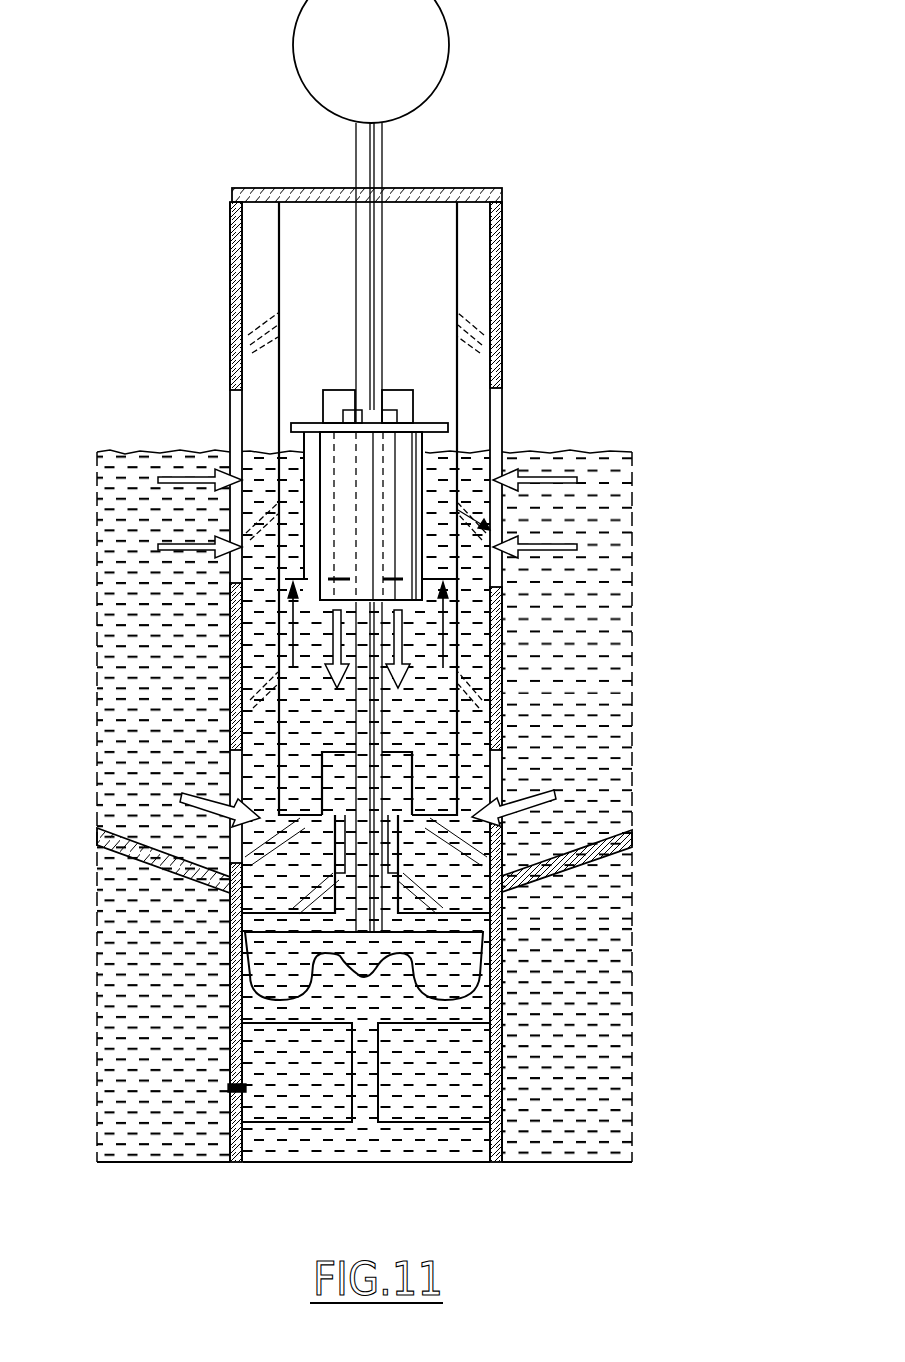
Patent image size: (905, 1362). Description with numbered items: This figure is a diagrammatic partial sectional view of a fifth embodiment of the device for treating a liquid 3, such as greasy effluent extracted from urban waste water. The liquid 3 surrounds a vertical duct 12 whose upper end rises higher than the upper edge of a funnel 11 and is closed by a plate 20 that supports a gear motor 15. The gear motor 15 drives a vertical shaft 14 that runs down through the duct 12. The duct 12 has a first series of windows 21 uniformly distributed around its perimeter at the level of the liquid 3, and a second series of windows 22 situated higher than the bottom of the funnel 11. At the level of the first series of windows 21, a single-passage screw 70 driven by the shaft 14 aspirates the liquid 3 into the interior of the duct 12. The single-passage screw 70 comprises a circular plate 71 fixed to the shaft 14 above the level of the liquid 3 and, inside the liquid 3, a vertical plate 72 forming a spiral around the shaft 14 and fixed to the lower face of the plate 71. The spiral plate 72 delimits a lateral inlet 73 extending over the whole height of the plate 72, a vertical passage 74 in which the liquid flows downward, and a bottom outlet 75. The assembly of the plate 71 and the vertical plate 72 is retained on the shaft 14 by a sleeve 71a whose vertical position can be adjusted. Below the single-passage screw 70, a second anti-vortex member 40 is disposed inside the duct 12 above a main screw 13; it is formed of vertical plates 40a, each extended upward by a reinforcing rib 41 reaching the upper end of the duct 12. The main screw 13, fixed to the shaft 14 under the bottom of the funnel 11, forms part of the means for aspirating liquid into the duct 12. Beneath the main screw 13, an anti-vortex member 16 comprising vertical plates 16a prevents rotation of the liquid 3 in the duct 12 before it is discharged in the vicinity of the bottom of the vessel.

The liquid 3 is at (590, 569).
The funnel 11 is at (590, 857).
The duct 12 is at (490, 1140).
The main screw 13 is at (457, 958).
The vertical shaft 14 is at (373, 318).
The gear motor 15 is at (440, 84).
The anti-vortex member 16 is at (243, 1088).
The vertical plates 16a is at (455, 1087).
The plate 20 is at (427, 188).
The first series of windows 21 is at (240, 407).
The second series of windows 22 is at (485, 805).
The second anti-vortex member 40 is at (262, 909).
The vertical plates 40a is at (227, 890).
The reinforcing rib 41 is at (280, 270).
The single-passage screw 70 is at (407, 507).
The circular plate 71 is at (417, 415).
The sleeve 71a is at (337, 413).
The vertical plate 72 is at (304, 533).
The lateral inlet 73 is at (316, 484).
The vertical passage 74 is at (437, 555).
The bottom outlet 75 is at (403, 601).